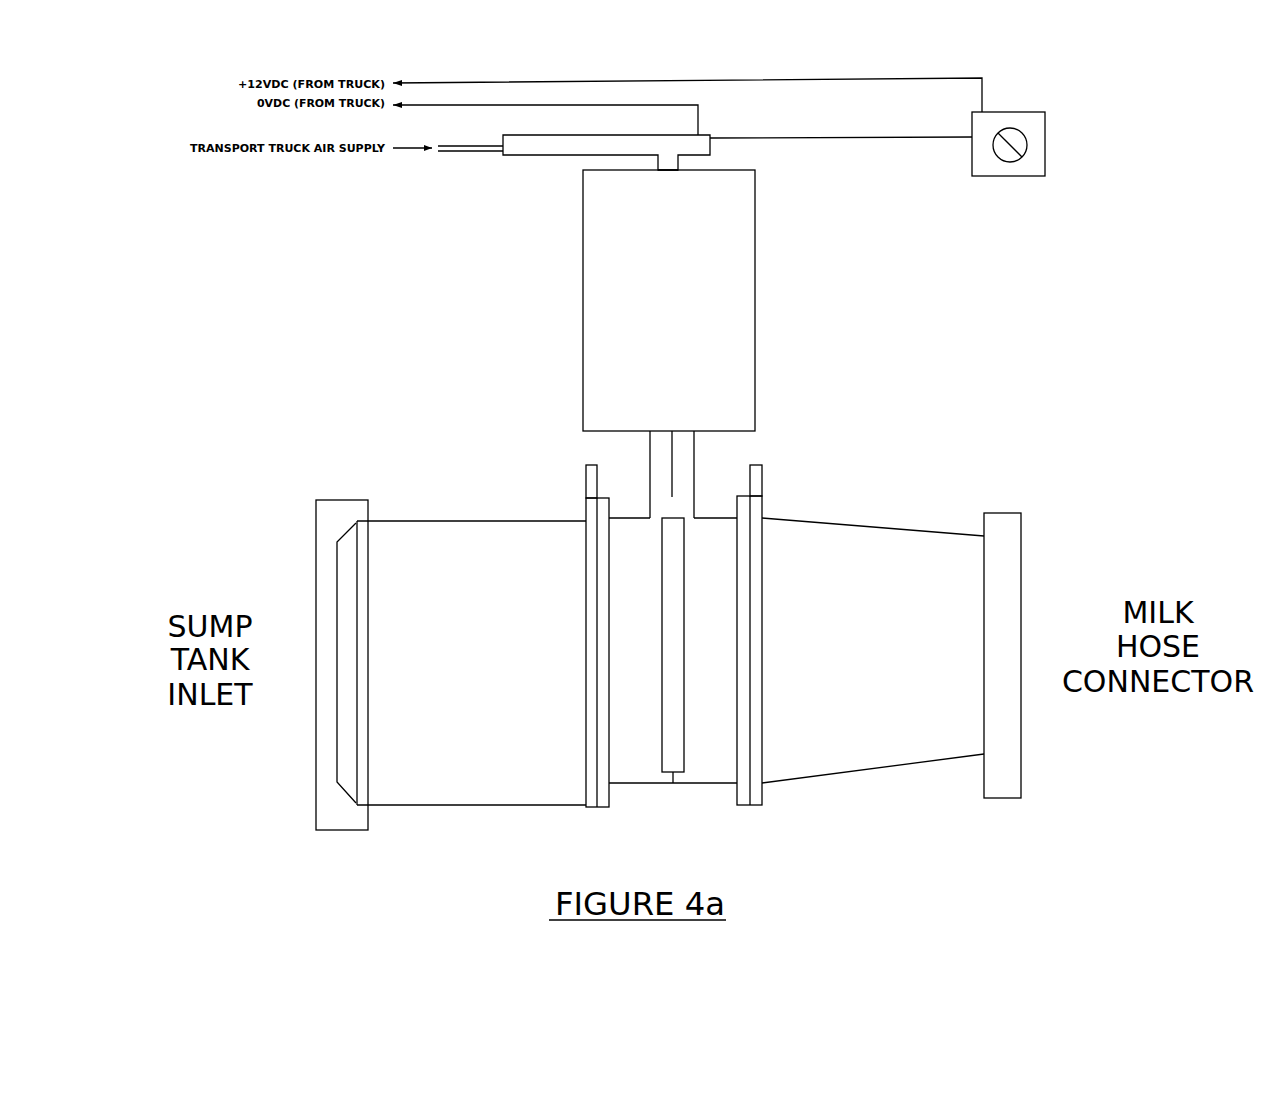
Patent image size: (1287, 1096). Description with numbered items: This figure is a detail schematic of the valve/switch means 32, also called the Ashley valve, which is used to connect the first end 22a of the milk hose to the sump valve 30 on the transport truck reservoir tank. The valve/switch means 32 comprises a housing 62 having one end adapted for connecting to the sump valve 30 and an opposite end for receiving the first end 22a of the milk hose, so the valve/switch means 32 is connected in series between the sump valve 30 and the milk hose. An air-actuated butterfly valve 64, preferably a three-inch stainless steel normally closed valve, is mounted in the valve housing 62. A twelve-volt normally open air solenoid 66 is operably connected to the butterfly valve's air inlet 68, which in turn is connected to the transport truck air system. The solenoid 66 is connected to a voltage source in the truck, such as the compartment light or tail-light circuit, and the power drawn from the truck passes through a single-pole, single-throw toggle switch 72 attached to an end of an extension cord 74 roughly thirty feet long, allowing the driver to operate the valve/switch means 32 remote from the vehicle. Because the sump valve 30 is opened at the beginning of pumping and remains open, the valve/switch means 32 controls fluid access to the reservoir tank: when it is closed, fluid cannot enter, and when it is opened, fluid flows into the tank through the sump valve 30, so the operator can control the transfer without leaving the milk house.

The first end of the milk hose 22a is at (1016, 504).
The sump valve 30 is at (315, 742).
The valve/switch means 32 is at (882, 270).
The housing 62 is at (715, 480).
The air-actuated butterfly valve 64 is at (680, 760).
The air solenoid 66 is at (502, 156).
The air inlet 68 is at (718, 153).
The toggle switch 72 is at (1053, 108).
The extension cord 74 is at (842, 130).